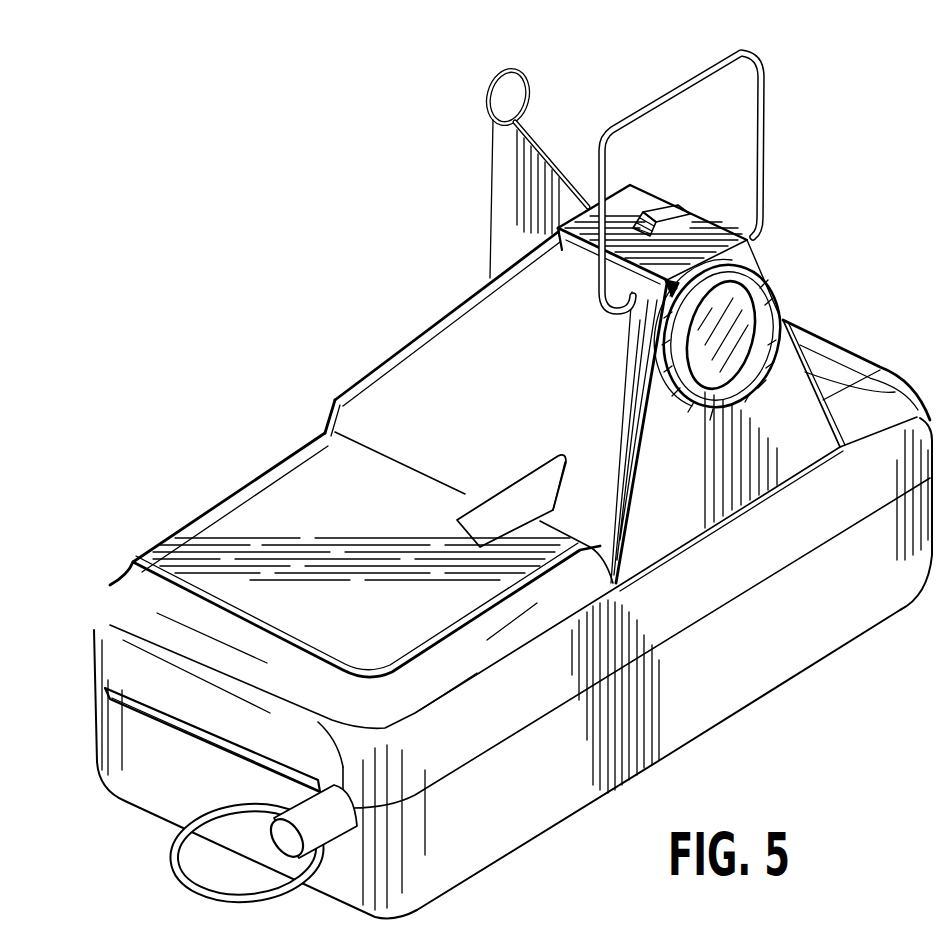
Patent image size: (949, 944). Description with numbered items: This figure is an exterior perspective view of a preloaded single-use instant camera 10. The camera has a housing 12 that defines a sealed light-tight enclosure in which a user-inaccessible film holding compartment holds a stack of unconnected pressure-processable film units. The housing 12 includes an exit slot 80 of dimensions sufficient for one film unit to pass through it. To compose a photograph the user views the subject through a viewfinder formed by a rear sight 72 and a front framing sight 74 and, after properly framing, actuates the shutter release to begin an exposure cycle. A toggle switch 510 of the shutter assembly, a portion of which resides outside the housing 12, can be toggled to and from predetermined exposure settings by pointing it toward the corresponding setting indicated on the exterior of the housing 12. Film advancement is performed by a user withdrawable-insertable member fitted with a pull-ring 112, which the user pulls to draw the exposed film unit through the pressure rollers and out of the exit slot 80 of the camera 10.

The preloaded single-use instant camera 10 is at (182, 268).
The housing 12 is at (493, 407).
The rear sight 72 is at (517, 70).
The front framing sight 74 is at (714, 70).
The exit slot 80 is at (118, 692).
The pull-ring 112 is at (180, 868).
The toggle switch 510 is at (663, 212).